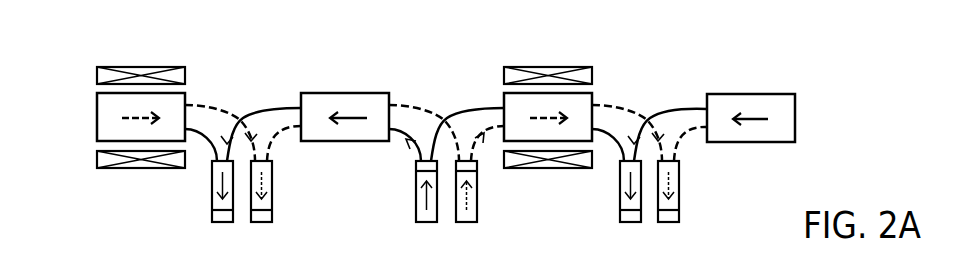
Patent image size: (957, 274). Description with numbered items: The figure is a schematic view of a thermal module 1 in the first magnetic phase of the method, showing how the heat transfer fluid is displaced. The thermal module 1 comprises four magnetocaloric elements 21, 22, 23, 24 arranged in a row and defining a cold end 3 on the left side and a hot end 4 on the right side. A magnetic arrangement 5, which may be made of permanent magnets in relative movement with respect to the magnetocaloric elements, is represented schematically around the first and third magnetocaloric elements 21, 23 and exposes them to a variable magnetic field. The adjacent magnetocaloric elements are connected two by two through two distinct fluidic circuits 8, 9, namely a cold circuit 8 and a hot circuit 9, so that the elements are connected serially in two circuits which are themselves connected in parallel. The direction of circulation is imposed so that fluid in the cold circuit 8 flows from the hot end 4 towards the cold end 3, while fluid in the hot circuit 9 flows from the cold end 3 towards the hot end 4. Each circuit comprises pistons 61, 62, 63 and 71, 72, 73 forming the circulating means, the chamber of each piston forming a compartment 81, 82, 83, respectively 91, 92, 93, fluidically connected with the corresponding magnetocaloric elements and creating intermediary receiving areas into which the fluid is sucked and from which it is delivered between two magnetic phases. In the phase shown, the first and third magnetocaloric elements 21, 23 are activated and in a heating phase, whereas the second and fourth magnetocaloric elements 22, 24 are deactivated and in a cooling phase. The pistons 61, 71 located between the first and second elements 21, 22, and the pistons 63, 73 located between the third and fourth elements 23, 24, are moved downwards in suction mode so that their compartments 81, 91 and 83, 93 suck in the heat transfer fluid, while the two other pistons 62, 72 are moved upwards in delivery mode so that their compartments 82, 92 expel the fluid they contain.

The thermal module 1 is at (845, 88).
The cold end 3 is at (97, 113).
The hot end 4 is at (793, 117).
The magnetic arrangement 5 is at (178, 78).
The cold circuit 8 is at (273, 112).
The hot circuit 9 is at (222, 108).
The first magnetocaloric element 21 is at (132, 102).
The second magnetocaloric element 22 is at (350, 102).
The third magnetocaloric element 23 is at (543, 102).
The fourth magnetocaloric element 24 is at (747, 103).
The piston 61 is at (222, 223).
The piston 62 is at (430, 223).
The piston 63 is at (627, 223).
The piston 71 is at (260, 223).
The piston 72 is at (465, 223).
The piston 73 is at (670, 223).
The compartment 81 is at (212, 178).
The compartment 82 is at (417, 165).
The compartment 83 is at (620, 178).
The compartment 91 is at (270, 175).
The compartment 92 is at (475, 163).
The compartment 93 is at (680, 165).